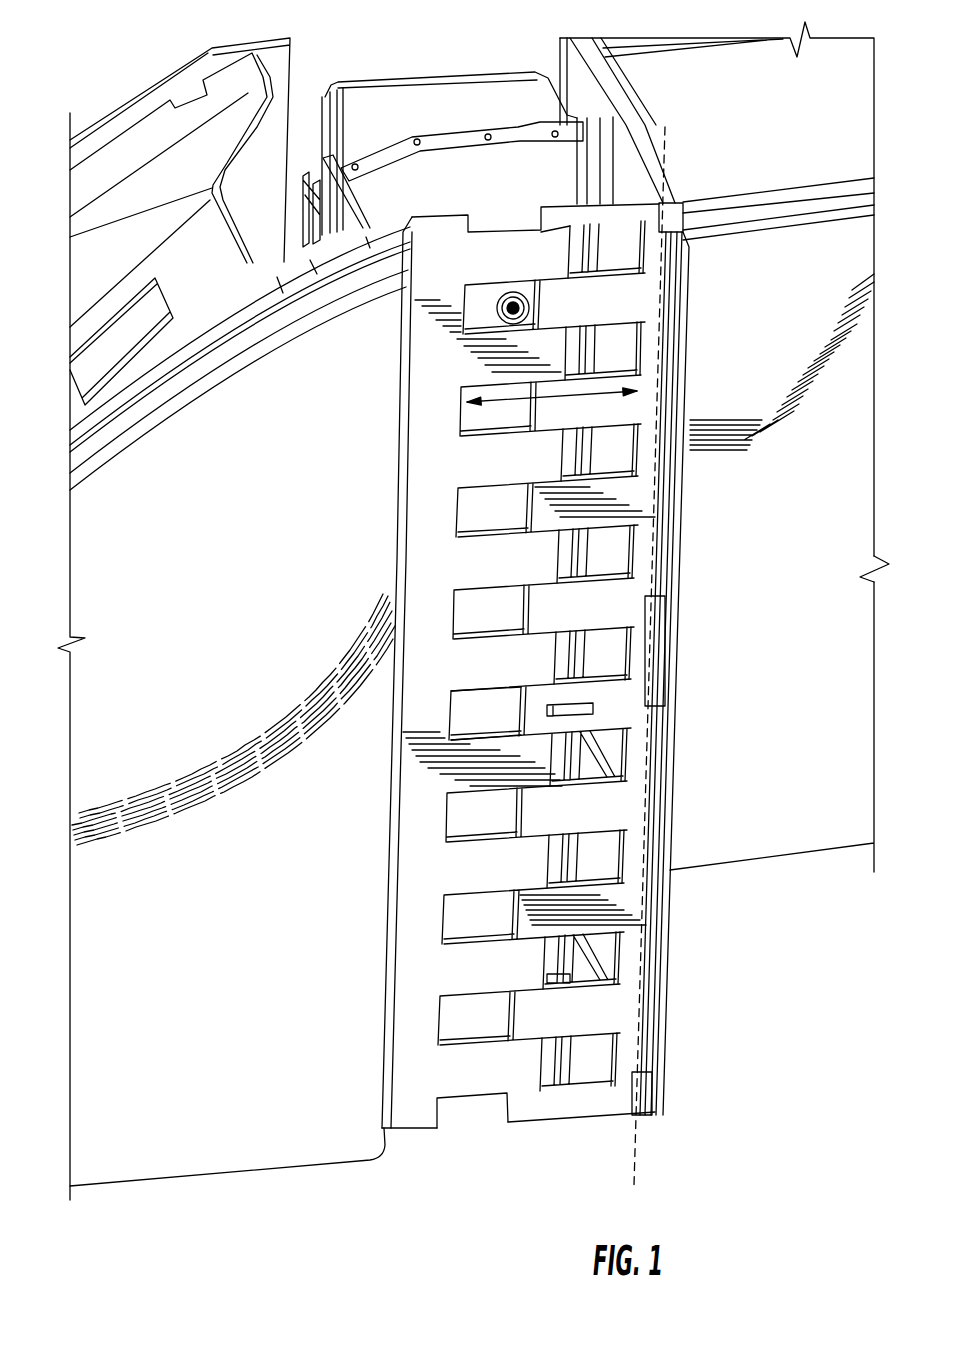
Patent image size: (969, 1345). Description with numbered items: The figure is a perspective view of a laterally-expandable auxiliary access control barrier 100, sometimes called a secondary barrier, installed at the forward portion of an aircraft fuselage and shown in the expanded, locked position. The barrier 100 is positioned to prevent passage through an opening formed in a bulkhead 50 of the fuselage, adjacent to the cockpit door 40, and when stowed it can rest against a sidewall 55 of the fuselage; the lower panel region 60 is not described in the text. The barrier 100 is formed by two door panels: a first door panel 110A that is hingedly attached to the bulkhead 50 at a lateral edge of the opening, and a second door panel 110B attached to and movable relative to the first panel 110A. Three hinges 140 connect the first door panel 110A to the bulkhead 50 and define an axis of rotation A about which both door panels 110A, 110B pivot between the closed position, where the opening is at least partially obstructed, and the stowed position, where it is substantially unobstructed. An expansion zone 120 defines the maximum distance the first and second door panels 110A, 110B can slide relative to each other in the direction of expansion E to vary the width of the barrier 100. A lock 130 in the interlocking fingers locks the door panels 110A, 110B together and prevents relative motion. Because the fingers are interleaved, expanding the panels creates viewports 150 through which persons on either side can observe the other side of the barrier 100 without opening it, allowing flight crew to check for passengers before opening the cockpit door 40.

The cockpit door 40 is at (458, 177).
The bulkhead 50 is at (127, 153).
The sidewall 55 is at (623, 187).
The lower panel 60 is at (233, 1090).
The auxiliary access control barrier 100 is at (550, 698).
The first door panel 110A is at (633, 303).
The second door panel 110B is at (415, 1105).
The expansion zone 120 is at (533, 1132).
The lock 130 is at (593, 705).
The hinges 140 is at (680, 214).
The viewports 150 is at (470, 714).
The direction of expansion E is at (553, 393).
The axis of rotation A is at (630, 1165).